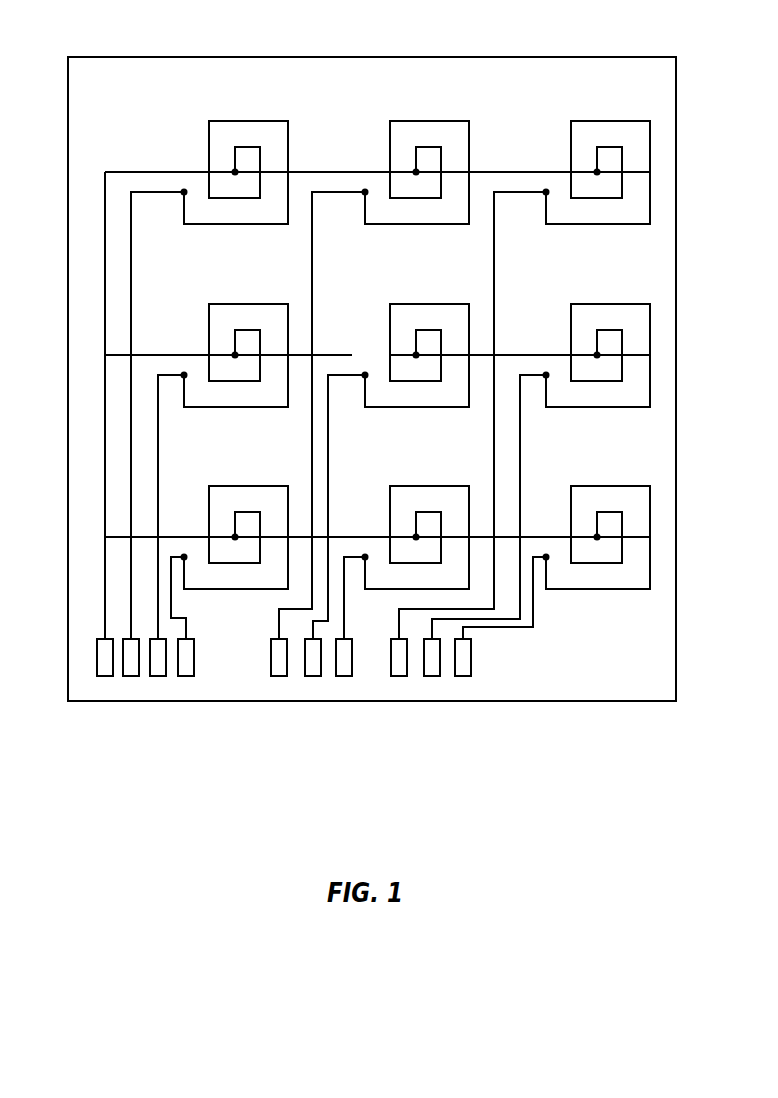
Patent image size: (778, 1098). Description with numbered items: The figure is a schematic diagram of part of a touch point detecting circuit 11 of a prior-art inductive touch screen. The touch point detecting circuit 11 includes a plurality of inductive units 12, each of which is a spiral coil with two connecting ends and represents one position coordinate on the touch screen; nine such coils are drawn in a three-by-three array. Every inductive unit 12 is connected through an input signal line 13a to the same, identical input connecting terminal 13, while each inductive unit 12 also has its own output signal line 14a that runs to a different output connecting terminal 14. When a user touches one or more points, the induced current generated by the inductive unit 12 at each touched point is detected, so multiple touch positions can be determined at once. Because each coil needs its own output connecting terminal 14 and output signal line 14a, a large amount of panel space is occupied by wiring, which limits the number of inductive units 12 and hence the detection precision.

The touch point detecting circuit 11 is at (600, 57).
The inductive unit 12 is at (439, 120).
The input connecting terminal 13 is at (105, 676).
The input signal line 13a is at (104, 402).
The output connecting terminal 14 is at (186, 676).
The output signal line 14a is at (483, 609).